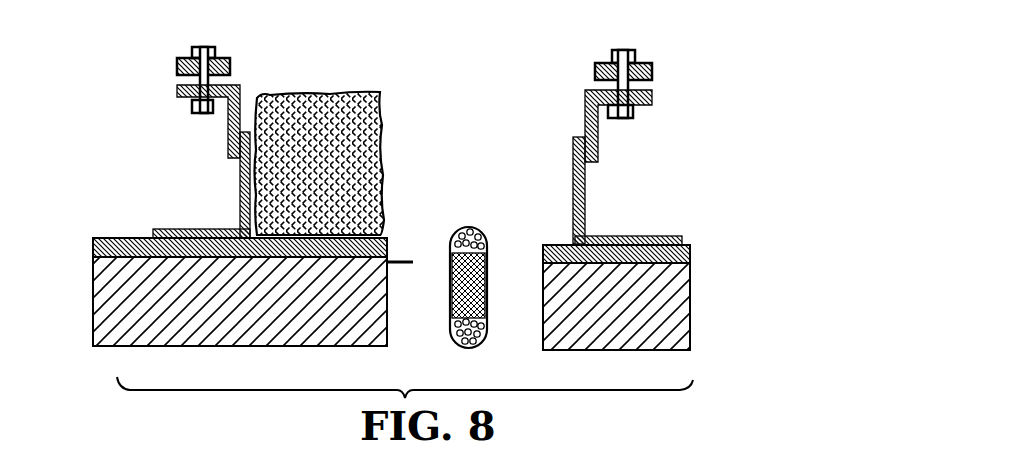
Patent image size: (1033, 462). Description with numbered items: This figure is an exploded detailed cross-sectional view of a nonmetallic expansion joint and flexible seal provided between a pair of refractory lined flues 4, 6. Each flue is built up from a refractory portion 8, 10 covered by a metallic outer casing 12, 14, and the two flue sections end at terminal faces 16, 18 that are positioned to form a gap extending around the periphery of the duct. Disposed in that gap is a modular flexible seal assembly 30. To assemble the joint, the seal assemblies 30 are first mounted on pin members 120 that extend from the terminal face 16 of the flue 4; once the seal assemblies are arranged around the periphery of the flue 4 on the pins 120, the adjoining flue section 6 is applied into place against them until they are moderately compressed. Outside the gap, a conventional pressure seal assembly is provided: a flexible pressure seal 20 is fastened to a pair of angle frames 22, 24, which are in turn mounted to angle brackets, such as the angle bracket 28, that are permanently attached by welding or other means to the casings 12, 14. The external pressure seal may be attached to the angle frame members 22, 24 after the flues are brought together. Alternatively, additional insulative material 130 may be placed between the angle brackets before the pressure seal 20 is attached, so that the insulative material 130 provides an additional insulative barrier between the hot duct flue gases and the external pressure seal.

The flue 4 is at (215, 315).
The flue 6 is at (646, 315).
The refractory portion 8 is at (118, 338).
The refractory portion 10 is at (672, 342).
The metallic outer casing 12 is at (93, 252).
The metallic outer casing 14 is at (692, 257).
The terminal face 16 is at (388, 333).
The terminal face 18 is at (543, 333).
The flexible pressure seal 20 is at (240, 198).
The angle frame 22 is at (228, 143).
The angle frame 24 is at (598, 145).
The angle bracket 28 is at (585, 193).
The flexible seal assembly 30 is at (467, 355).
The pin member 120 is at (397, 260).
The insulative material 130 is at (337, 102).